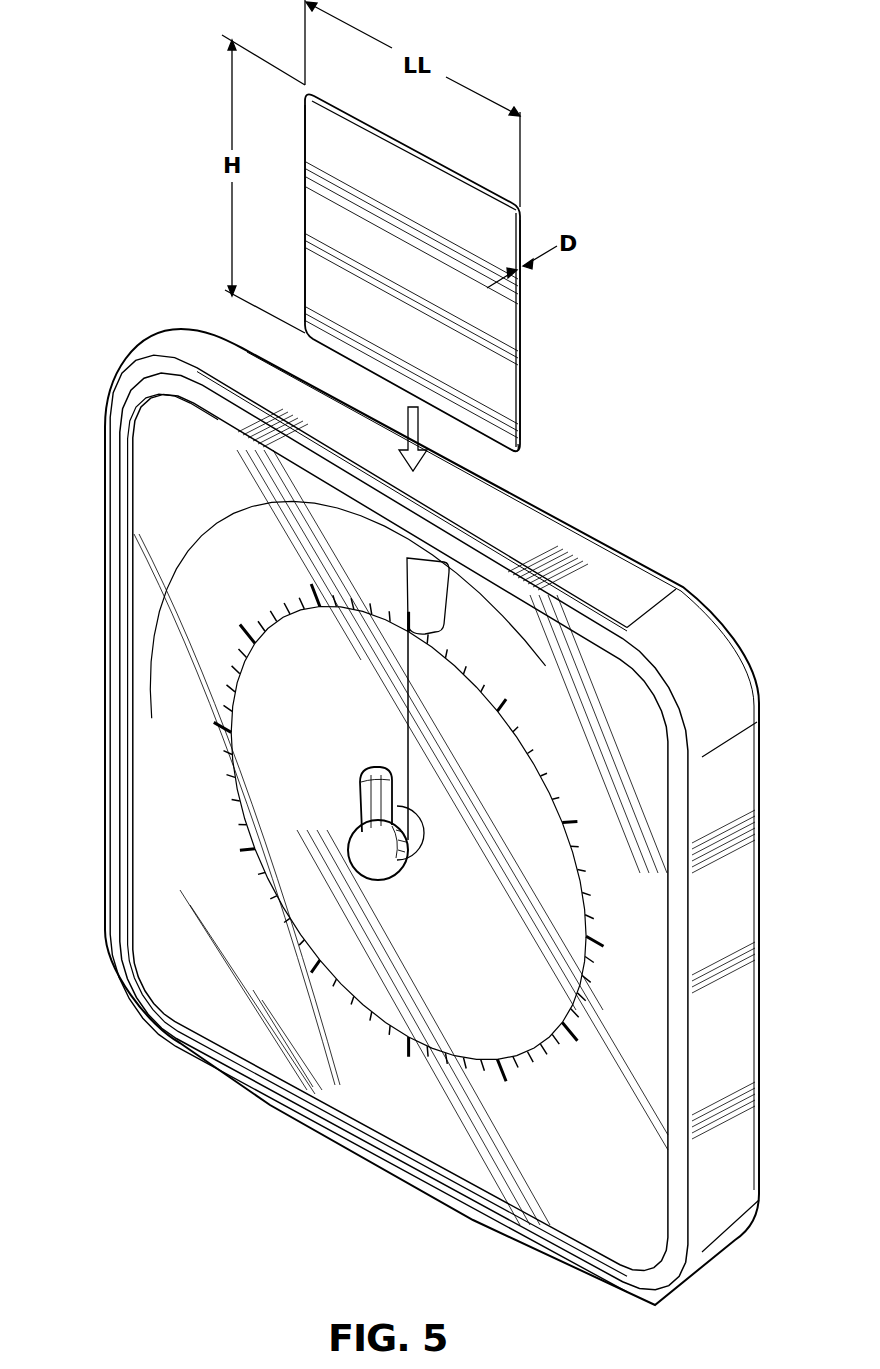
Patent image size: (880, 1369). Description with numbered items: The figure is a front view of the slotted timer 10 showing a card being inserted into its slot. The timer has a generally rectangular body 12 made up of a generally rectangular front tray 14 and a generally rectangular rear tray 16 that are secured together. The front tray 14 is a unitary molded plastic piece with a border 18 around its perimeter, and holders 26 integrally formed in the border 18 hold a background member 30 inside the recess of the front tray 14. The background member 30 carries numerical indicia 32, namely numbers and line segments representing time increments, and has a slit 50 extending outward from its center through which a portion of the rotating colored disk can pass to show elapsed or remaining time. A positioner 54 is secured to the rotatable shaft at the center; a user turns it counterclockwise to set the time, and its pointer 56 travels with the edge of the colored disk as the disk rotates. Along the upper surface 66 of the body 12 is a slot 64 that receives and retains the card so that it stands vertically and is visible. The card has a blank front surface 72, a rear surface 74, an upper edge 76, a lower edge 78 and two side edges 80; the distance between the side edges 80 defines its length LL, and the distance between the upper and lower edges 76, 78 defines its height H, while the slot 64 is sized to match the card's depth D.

The slotted timer 10 is at (83, 353).
The generally rectangular body 12 is at (751, 654).
The front tray 14 is at (110, 663).
The rear tray 16 is at (759, 883).
The border 18 is at (207, 1060).
The holders 26 is at (128, 525).
The background member 30 is at (582, 1228).
The numerical indicia 32 is at (206, 742).
The slit 50 is at (408, 758).
The positioner 54 is at (401, 880).
The pointer 56 is at (362, 802).
The slot 64 is at (473, 530).
The upper surface 66 is at (637, 572).
The front surface 72 is at (392, 345).
The rear surface 74 is at (478, 186).
The upper edge 76 is at (350, 107).
The lower edge 78 is at (508, 456).
The side edges 80 is at (305, 218).